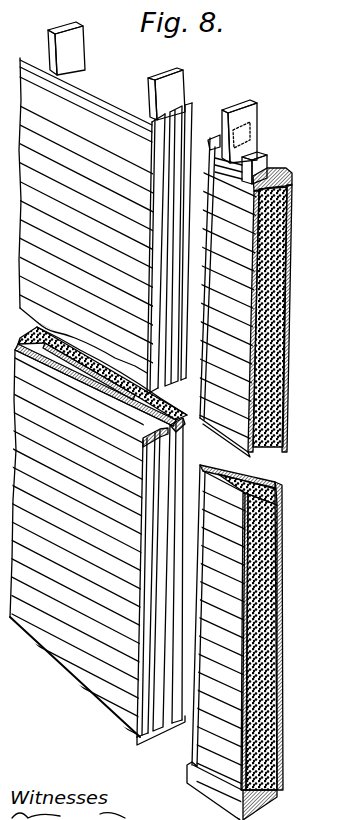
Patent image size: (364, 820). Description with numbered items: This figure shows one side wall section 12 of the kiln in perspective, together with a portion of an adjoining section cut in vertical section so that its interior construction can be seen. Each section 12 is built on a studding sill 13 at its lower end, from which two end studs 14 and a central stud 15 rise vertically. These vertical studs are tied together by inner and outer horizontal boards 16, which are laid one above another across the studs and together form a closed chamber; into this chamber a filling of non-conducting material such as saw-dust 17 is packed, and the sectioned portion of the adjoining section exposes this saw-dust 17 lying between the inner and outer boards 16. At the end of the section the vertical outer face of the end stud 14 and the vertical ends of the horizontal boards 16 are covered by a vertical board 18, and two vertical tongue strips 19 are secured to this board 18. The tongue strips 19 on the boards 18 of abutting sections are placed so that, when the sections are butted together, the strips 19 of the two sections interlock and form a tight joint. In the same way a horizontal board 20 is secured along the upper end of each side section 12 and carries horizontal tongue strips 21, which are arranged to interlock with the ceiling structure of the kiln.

The side wall section 12 is at (57, 665).
The studding sill 13 is at (153, 735).
The end stud 14 is at (178, 81).
The central stud 15 is at (47, 327).
The horizontal board 16 is at (292, 612).
The saw-dust filling 17 is at (272, 247).
The vertical board 18 is at (190, 109).
The vertical tongue strip 19 is at (188, 130).
The horizontal board 20 is at (92, 107).
The horizontal tongue strip 21 is at (88, 91).